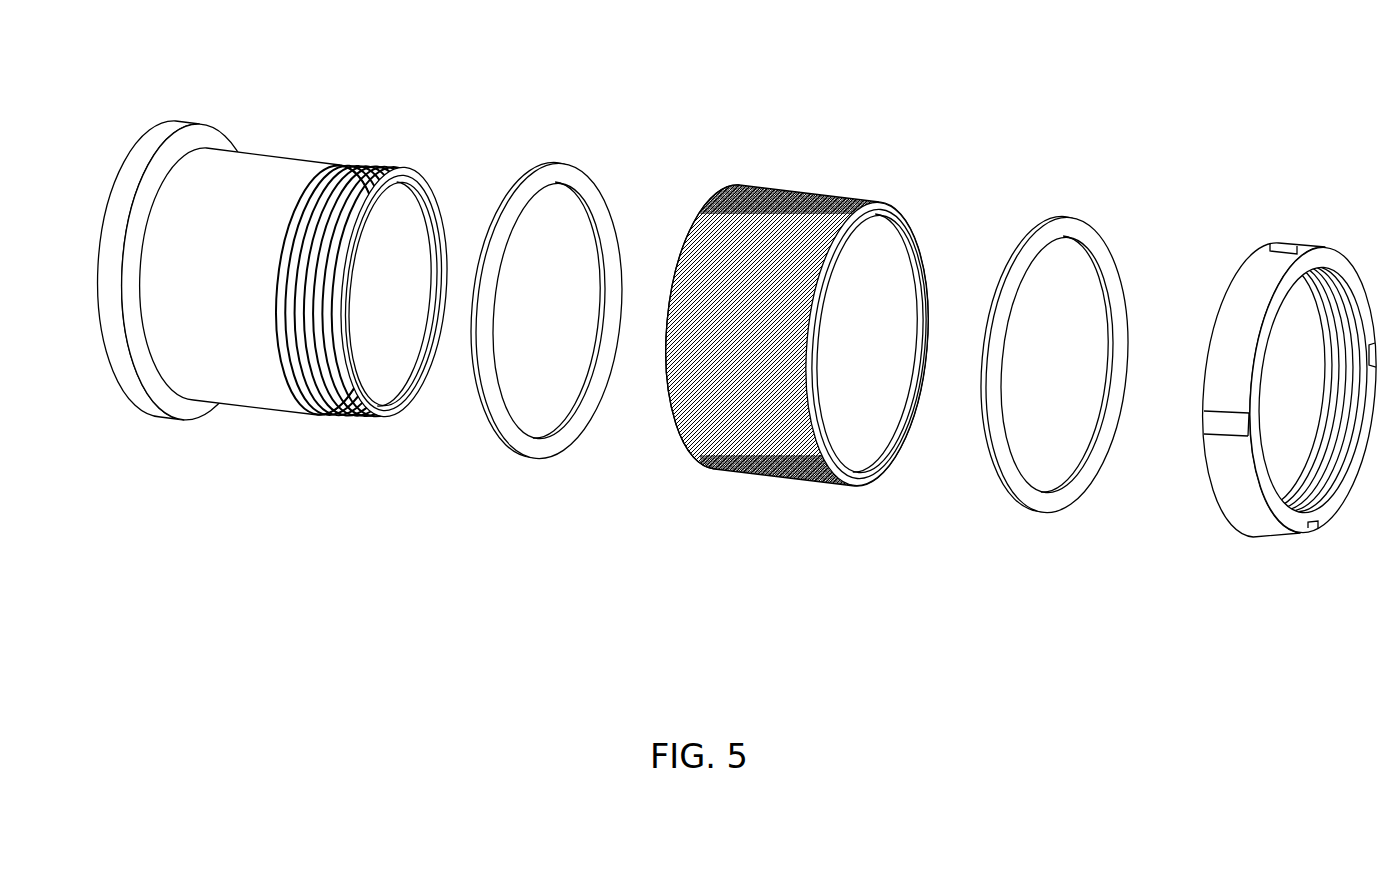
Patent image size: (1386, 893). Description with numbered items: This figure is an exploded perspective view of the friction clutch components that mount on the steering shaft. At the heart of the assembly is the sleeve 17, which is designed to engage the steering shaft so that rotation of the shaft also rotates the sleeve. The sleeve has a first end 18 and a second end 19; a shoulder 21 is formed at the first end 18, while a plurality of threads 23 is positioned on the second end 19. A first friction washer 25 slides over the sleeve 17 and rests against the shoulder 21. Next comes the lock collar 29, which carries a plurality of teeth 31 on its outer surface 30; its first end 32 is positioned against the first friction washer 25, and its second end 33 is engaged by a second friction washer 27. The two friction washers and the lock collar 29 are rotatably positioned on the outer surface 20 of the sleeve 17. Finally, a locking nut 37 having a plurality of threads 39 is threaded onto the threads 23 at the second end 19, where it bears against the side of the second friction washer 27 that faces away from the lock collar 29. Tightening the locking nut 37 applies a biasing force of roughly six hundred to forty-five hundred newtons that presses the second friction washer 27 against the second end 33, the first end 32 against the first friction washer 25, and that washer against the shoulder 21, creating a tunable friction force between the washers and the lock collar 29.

The sleeve 17 is at (272, 285).
The first end 18 is at (178, 279).
The second end 19 is at (377, 417).
The outer surface 20 is at (233, 352).
The shoulder 21 is at (130, 397).
The threads 23 is at (373, 168).
The first friction washer 25 is at (562, 163).
The second friction washer 27 is at (1072, 217).
The lock collar 29 is at (823, 485).
The outer surface 30 is at (784, 391).
The teeth 31 is at (768, 185).
The first end 32 is at (682, 432).
The second end 33 is at (865, 480).
The locking nut 37 is at (1294, 358).
The threads 39 is at (1327, 460).